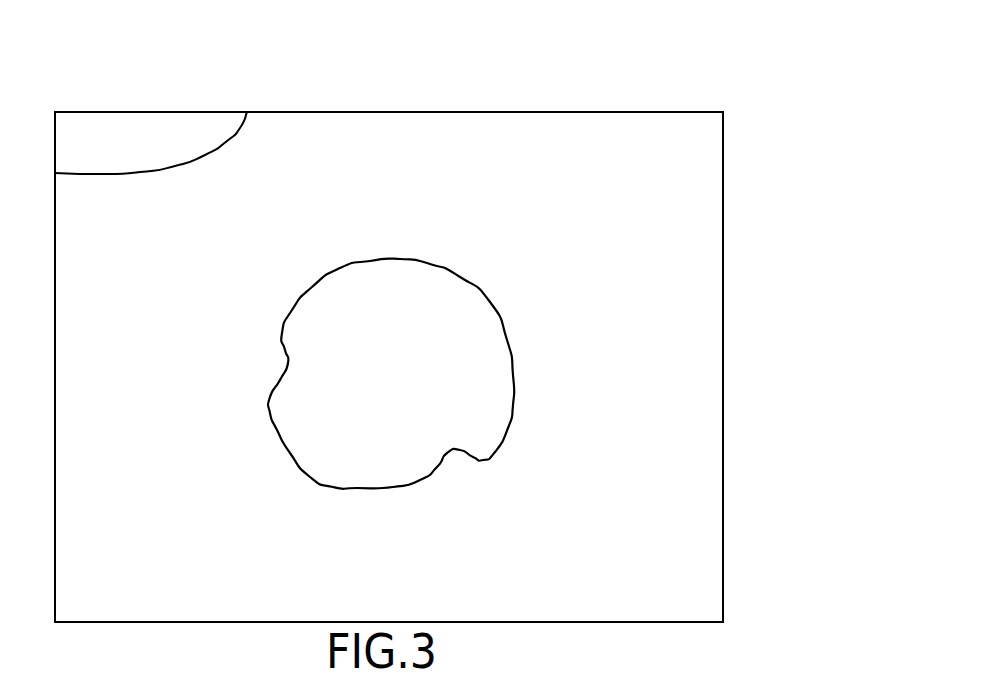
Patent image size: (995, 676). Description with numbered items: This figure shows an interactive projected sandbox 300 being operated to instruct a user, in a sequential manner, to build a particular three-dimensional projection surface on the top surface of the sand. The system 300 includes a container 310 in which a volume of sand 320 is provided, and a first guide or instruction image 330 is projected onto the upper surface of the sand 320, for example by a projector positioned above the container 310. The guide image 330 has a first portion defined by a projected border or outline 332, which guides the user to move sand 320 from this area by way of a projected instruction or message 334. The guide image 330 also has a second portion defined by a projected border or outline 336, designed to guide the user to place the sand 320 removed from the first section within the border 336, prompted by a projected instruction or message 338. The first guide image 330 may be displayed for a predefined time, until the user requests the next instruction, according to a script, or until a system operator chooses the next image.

The interactive projected sandbox 300 is at (747, 67).
The container 310 is at (668, 112).
The sand 320 is at (708, 275).
The first guide or instruction image 330 is at (752, 603).
The projected border or outline of first section 332 is at (235, 112).
The projected instruction or message 334 is at (193, 137).
The projected border or outline of second section 336 is at (440, 265).
The projected instruction or message 338 is at (478, 363).